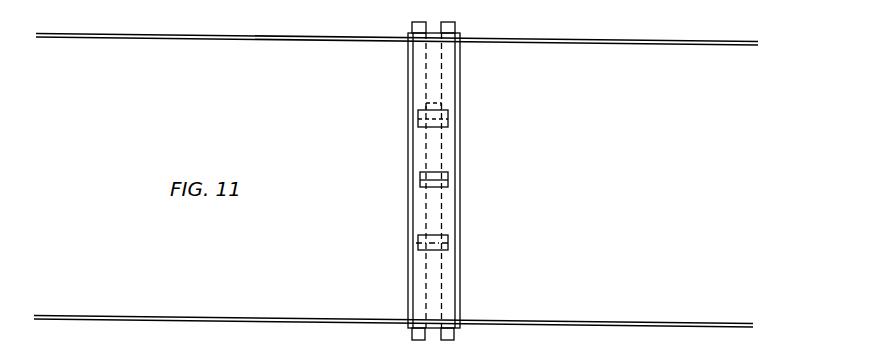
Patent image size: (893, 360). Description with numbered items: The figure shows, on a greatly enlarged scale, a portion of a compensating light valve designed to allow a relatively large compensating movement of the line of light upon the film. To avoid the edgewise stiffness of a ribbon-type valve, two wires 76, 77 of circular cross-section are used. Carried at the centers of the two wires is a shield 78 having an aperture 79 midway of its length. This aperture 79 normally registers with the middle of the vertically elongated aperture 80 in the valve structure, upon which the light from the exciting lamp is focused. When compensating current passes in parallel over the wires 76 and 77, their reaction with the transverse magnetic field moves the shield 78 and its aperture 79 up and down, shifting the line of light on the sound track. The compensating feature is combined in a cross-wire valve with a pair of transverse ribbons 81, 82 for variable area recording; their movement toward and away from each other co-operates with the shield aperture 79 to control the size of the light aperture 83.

The wire 76 is at (172, 40).
The wire 77 is at (174, 314).
The shield 78 is at (461, 99).
The aperture 79 is at (420, 181).
The vertically elongated aperture 80 is at (423, 102).
The transverse ribbon 81 is at (423, 24).
The transverse ribbon 82 is at (453, 25).
The light aperture 83 is at (460, 181).